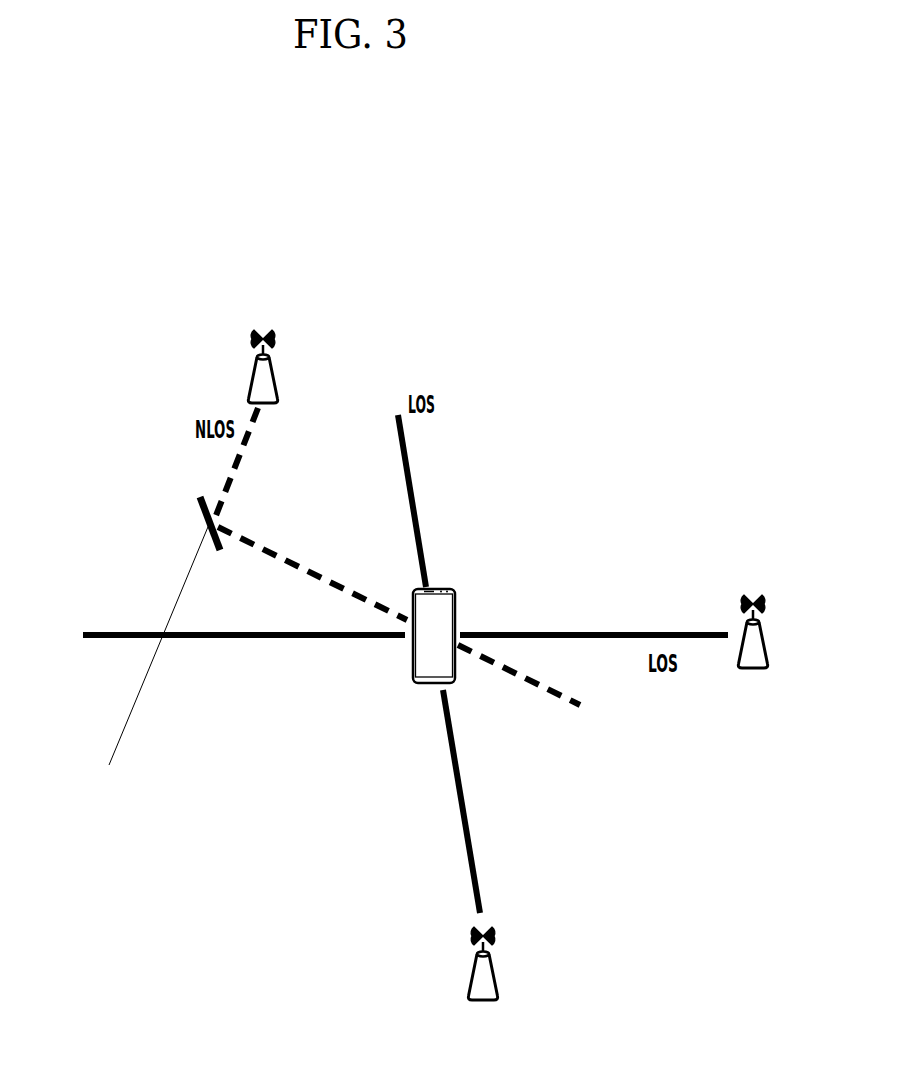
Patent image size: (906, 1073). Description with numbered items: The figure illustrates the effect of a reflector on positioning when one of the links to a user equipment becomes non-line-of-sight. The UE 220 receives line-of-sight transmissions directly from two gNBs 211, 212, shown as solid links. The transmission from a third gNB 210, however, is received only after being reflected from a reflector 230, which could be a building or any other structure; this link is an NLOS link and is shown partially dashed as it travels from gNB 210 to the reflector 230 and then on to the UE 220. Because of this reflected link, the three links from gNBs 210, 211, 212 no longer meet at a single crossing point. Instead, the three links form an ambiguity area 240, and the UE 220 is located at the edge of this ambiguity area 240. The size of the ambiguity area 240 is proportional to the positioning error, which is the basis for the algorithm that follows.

The gNB 210 is at (221, 338).
The gNB 211 is at (437, 974).
The gNB 212 is at (711, 666).
The UE 220 is at (390, 668).
The reflector 230 is at (136, 482).
The ambiguity area 240 is at (146, 643).